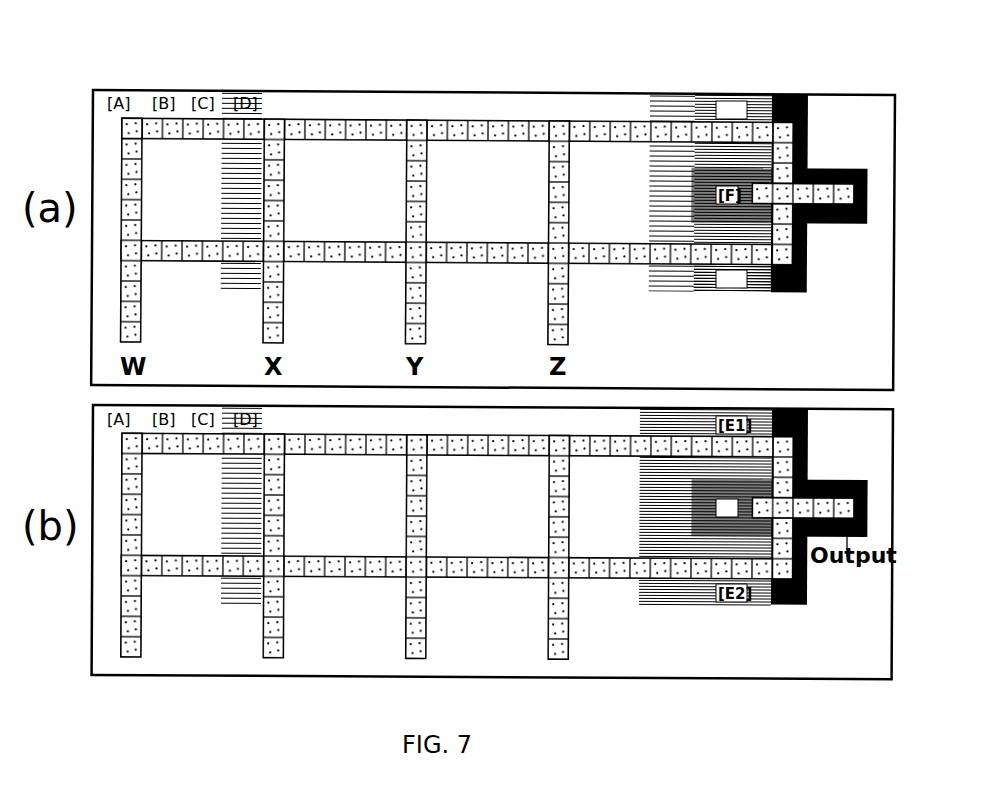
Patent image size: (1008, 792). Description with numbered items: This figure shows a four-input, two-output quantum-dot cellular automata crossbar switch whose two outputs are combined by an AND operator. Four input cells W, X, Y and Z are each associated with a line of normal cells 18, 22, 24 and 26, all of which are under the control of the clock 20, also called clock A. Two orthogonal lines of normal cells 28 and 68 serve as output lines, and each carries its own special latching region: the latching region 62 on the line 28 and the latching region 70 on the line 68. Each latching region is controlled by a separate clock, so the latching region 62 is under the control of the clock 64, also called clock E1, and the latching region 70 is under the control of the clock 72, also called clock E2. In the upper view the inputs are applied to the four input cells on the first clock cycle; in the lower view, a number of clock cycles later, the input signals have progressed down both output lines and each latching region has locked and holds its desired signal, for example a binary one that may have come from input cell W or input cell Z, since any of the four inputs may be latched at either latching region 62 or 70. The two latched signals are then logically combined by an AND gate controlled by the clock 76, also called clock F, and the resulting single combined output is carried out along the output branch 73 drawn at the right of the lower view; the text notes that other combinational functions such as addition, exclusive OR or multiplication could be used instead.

The line of normal cells 18 is at (122, 298).
The clock 20 is at (130, 120).
The line of normal cells 22 is at (263, 297).
The line of normal cells 24 is at (404, 297).
The line of normal cells 26 is at (548, 297).
The orthogonal line of normal cells 28 is at (786, 258).
The latching region 62 is at (755, 97).
The clock 64 is at (720, 103).
The orthogonal line of normal cells 68 is at (390, 122).
The latching region 70 is at (757, 292).
The clock 72 is at (723, 289).
The output channel 73 is at (820, 508).
The clock 76 is at (715, 507).